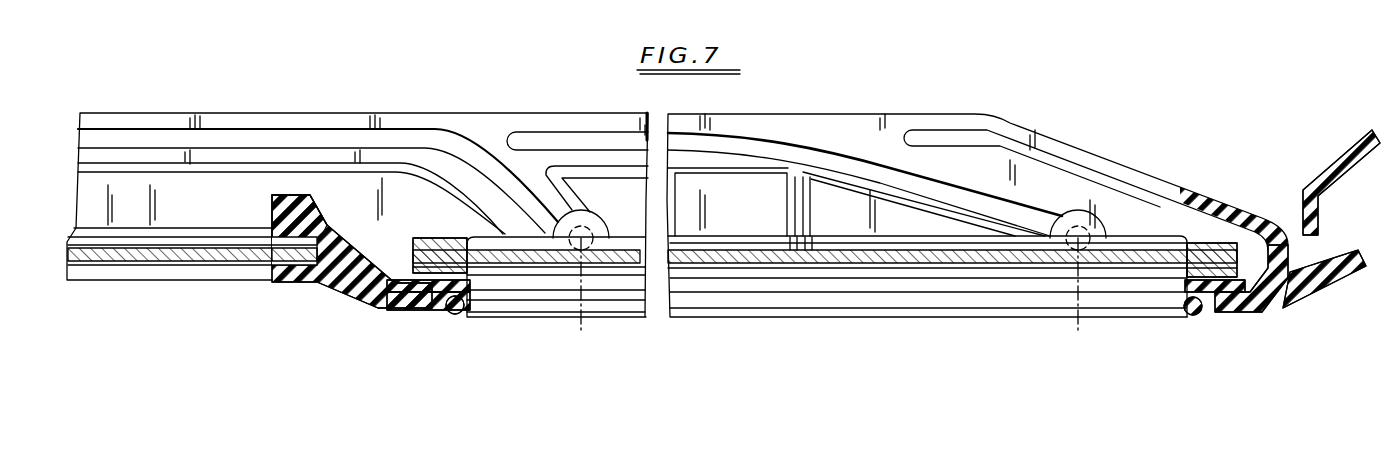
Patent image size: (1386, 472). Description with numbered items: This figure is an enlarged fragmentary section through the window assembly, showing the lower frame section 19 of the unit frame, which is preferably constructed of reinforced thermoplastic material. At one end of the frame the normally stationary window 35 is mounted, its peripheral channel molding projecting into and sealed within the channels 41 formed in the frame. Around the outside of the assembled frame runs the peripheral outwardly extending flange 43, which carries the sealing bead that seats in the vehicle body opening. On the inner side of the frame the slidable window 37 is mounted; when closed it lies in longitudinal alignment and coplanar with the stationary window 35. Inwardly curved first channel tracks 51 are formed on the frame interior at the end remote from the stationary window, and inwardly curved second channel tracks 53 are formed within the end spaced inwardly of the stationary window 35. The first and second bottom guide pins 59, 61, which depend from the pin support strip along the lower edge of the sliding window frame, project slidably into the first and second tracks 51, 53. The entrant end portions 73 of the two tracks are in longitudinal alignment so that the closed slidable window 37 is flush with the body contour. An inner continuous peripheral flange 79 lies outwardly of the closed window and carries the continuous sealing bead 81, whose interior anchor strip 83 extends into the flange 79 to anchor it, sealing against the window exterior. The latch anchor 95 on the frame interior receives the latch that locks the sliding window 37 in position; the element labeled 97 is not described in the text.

The lower frame section 19 is at (970, 114).
The stationary window 35 is at (205, 262).
The slidable window 37 is at (873, 263).
The channels 41 is at (318, 285).
The peripheral outwardly extending flange 43 is at (1307, 292).
The first channel tracks 51 is at (778, 133).
The second channel tracks 53 is at (332, 131).
The first bottom guide pin 59 is at (1078, 335).
The second bottom guide pin 61 is at (580, 244).
The entrant end portions 73 is at (543, 224).
The inner continuous peripheral flange 79 is at (421, 307).
The continuous sealing bead 81 is at (455, 316).
The interior anchor strip 83 is at (383, 324).
The latch anchor 95 is at (282, 216).
The clip 97 is at (1337, 160).